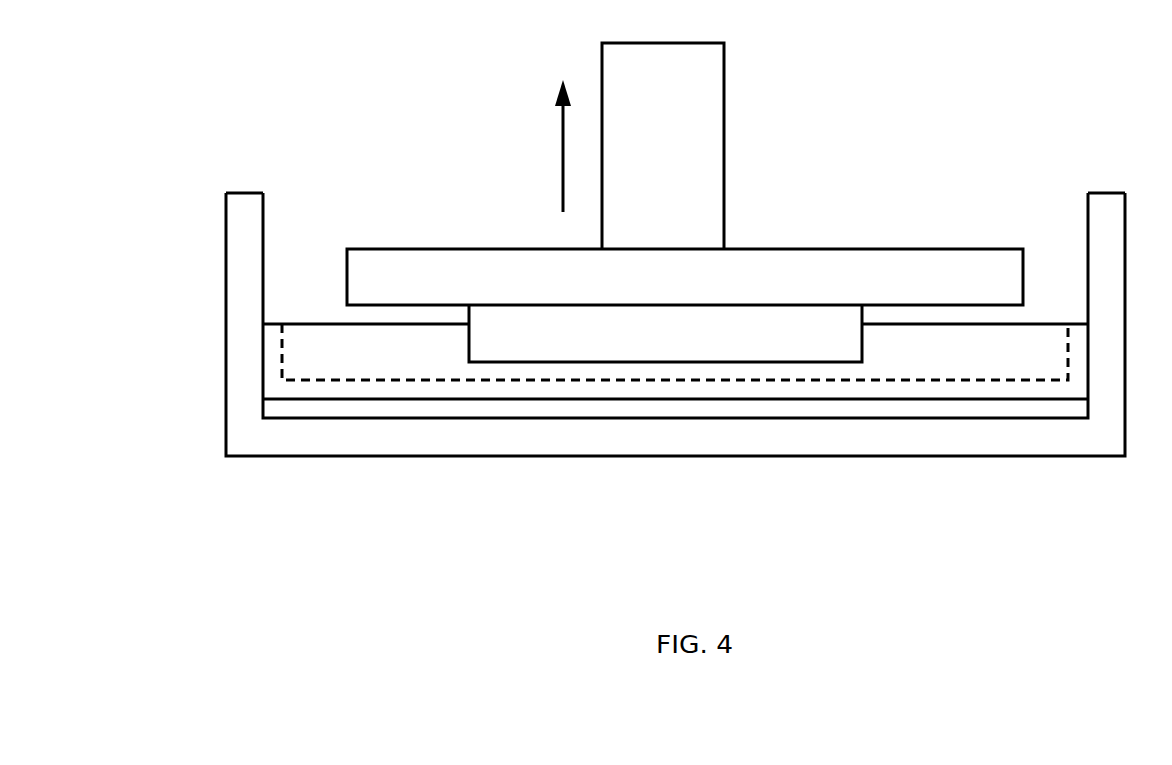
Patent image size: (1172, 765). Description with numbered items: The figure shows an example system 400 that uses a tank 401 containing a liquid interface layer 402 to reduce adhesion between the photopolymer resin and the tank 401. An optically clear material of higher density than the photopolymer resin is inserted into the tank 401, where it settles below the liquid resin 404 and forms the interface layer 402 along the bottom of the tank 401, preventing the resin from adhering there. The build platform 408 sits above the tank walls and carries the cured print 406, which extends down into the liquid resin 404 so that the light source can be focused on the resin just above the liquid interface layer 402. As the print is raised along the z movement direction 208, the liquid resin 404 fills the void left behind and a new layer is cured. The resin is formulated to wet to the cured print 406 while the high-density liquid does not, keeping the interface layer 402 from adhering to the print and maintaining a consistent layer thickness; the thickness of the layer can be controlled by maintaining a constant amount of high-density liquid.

The system 400 is at (244, 100).
The tank 401 is at (630, 446).
The liquid interface layer 402 is at (708, 410).
The liquid resin 404 is at (1058, 374).
The 3D print 406 is at (852, 355).
The build platform 408 is at (757, 293).
The z movement direction 208 is at (543, 187).